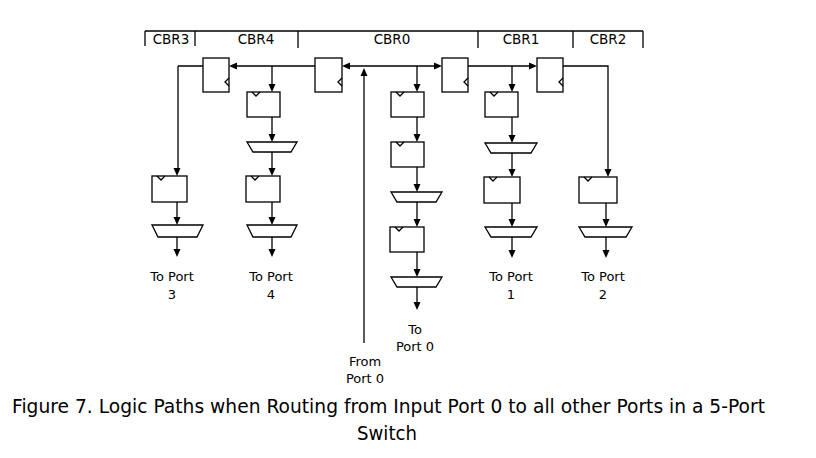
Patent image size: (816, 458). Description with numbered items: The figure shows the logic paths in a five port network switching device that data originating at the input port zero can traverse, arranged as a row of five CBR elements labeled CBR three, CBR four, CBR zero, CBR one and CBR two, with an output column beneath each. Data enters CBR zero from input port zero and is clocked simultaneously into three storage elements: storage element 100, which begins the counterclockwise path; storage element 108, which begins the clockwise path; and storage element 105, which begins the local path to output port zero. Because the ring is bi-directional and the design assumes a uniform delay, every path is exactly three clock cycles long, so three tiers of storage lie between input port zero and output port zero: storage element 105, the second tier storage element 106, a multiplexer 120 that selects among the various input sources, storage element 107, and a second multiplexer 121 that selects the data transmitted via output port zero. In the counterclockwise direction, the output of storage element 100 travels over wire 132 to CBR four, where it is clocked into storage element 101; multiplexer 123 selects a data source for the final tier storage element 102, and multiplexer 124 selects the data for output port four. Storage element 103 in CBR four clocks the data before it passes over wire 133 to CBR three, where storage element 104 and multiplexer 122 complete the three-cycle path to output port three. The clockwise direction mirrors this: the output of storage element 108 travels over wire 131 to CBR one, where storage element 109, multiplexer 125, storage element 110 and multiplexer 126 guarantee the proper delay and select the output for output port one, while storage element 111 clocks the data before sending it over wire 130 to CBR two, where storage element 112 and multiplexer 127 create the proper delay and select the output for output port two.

The storage element 100 is at (330, 67).
The storage element 101 is at (280, 117).
The storage element 102 is at (278, 200).
The storage element 103 is at (217, 68).
The storage element 104 is at (148, 200).
The storage element 105 is at (423, 117).
The storage element 106 is at (423, 167).
The storage element 107 is at (422, 252).
The storage element 108 is at (456, 67).
The storage element 109 is at (517, 117).
The storage element 110 is at (519, 202).
The storage element 111 is at (558, 84).
The storage element 112 is at (617, 202).
The multiplexer 120 is at (424, 209).
The second multiplexer 121 is at (425, 293).
The multiplexer 122 is at (160, 241).
The multiplexer 123 is at (283, 159).
The second multiplexer 124 is at (284, 241).
The multiplexer 125 is at (522, 160).
The multiplexer 126 is at (520, 242).
The multiplexer 127 is at (622, 242).
The wire 130 is at (608, 76).
The wire 131 is at (502, 71).
The wire 132 is at (272, 70).
The wire 133 is at (175, 119).